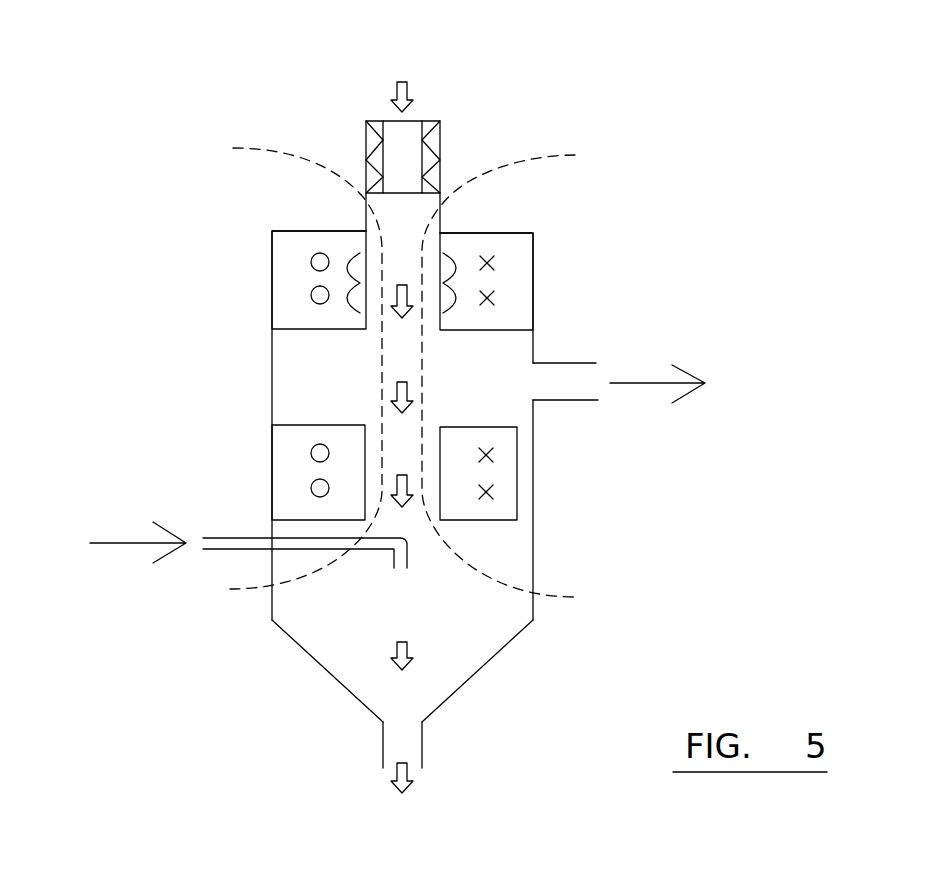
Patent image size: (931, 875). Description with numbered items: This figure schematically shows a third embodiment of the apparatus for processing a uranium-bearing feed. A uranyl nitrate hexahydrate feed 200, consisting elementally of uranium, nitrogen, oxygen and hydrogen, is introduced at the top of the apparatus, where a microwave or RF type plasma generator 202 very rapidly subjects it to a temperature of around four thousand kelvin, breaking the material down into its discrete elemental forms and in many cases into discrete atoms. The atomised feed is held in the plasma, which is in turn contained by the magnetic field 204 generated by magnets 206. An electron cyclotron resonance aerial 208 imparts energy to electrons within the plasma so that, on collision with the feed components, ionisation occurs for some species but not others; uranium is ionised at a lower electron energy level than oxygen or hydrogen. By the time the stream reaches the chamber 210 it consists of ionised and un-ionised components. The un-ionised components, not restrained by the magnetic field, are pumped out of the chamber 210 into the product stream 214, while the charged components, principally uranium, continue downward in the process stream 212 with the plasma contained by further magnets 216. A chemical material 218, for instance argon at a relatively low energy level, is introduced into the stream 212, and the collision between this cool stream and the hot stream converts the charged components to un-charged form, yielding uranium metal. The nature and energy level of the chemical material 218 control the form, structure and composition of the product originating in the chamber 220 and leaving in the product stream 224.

The uranyl nitrate hexahydrate feed 200 is at (401, 81).
The microwave or RF type plasma generator 202 is at (436, 138).
The magnetic field 204 is at (487, 167).
The magnets 206 is at (512, 297).
The electron cyclotron resonance aerial 208 is at (460, 273).
The chamber 210 is at (310, 380).
The process stream 212 is at (407, 457).
The product stream 214 is at (644, 383).
The further magnets 216 is at (510, 507).
The chemical material 218 is at (224, 545).
The chamber 220 is at (397, 598).
The product stream 224 is at (407, 775).